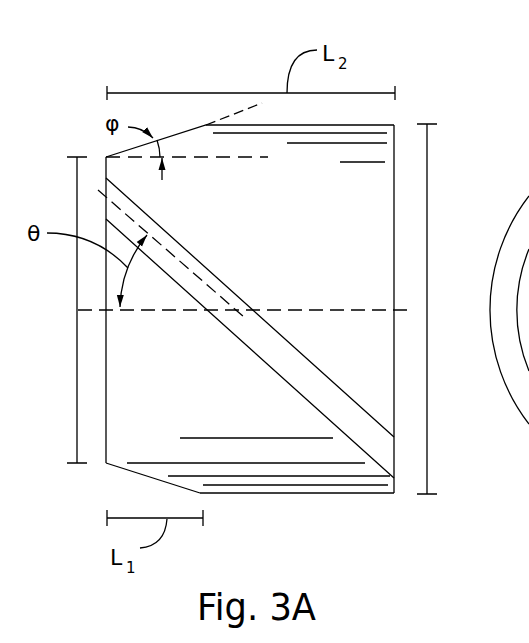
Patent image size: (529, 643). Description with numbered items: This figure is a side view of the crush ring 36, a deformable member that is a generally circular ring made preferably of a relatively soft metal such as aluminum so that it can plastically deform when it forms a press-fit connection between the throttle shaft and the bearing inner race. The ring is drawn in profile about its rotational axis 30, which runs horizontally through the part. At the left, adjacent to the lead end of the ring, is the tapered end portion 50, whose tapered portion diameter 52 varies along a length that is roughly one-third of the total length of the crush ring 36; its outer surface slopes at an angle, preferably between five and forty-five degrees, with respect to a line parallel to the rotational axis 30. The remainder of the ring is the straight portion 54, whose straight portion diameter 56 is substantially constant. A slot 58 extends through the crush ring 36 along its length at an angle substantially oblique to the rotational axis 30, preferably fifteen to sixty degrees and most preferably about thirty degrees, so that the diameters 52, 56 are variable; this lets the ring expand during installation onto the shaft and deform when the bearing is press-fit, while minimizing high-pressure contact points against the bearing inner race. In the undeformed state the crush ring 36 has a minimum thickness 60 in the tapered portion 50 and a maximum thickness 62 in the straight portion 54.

The rotational axis 30 is at (147, 312).
The crush ring 36 is at (400, 110).
The tapered end portion 50 is at (120, 468).
The tapered portion diameter 52 is at (72, 192).
The straight portion 54 is at (318, 497).
The straight portion diameter 56 is at (430, 481).
The slot 58 is at (254, 354).
The minimum thickness 60 is at (527, 373).
The maximum thickness 62 is at (514, 217).